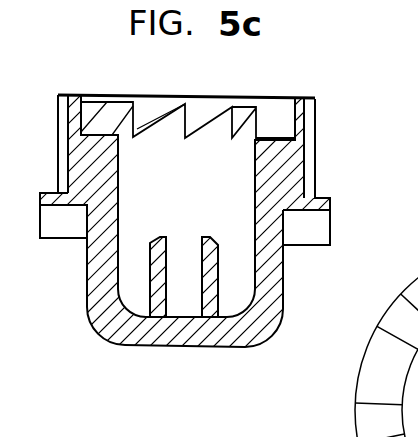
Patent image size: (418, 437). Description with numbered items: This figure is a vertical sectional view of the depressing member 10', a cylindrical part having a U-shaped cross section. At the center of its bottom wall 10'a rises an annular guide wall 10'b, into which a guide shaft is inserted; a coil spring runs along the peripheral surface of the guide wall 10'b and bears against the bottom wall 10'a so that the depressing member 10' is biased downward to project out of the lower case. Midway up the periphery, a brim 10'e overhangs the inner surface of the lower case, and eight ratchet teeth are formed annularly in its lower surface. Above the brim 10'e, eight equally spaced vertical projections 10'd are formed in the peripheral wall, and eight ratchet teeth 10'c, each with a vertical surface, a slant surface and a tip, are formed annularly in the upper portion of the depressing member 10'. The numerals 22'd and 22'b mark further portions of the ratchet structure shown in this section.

The depressing member 10' is at (209, 218).
The bottom wall 10'a is at (185, 346).
The annular guide wall 10'b is at (121, 313).
The ratchet teeth 10'c is at (188, 96).
The vertical projections 10'd is at (345, 148).
The brim 10'e is at (334, 212).
The mounting block 22'd is at (57, 243).
The adjacent member 22'b is at (401, 10).